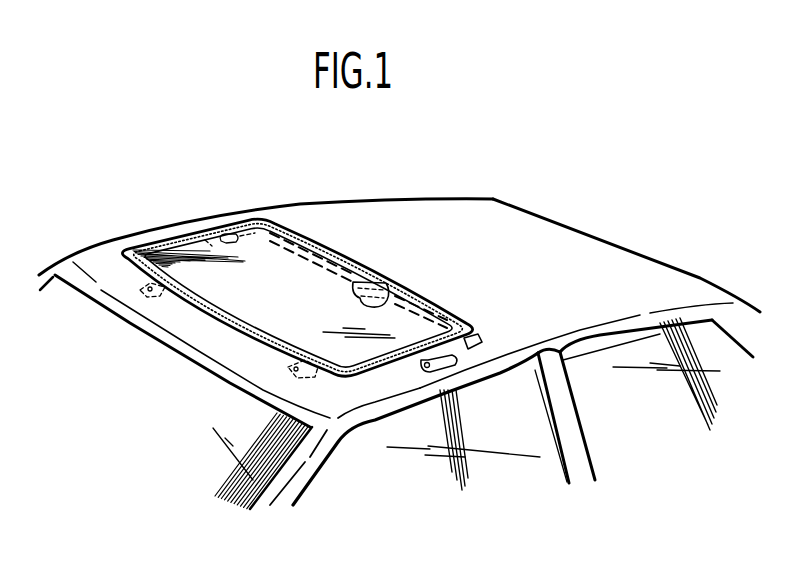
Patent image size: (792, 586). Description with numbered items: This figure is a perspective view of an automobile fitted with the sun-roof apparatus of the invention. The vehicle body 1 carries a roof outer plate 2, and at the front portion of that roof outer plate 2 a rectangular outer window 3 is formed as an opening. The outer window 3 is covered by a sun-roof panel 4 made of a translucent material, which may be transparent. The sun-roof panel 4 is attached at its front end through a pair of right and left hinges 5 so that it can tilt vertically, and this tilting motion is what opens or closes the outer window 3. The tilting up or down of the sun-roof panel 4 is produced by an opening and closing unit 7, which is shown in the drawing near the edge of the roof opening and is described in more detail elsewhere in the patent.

The vehicle body 1 is at (594, 224).
The roof outer plate 2 is at (410, 210).
The outer window 3 is at (168, 238).
The sun-roof panel 4 is at (308, 276).
The hinges 5 is at (150, 298).
The opening and closing unit 7 is at (392, 279).